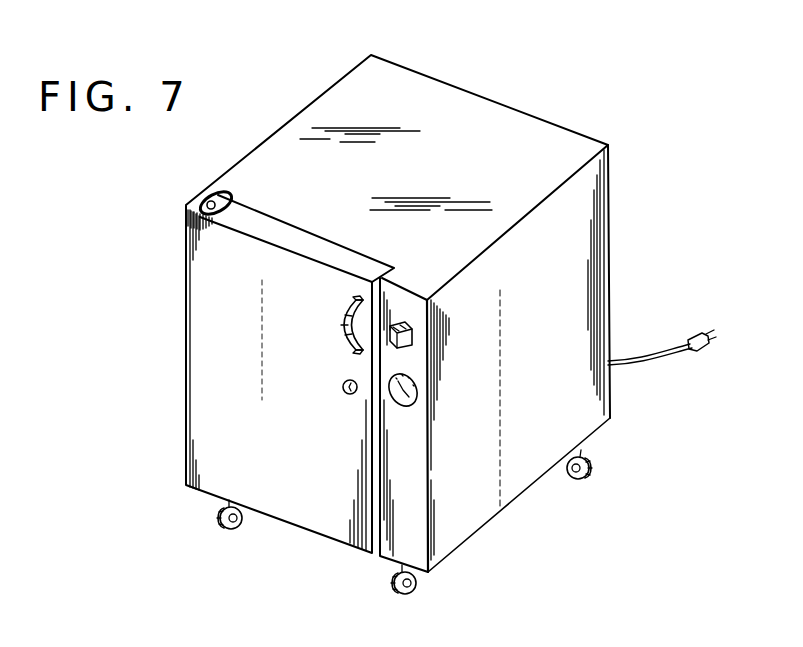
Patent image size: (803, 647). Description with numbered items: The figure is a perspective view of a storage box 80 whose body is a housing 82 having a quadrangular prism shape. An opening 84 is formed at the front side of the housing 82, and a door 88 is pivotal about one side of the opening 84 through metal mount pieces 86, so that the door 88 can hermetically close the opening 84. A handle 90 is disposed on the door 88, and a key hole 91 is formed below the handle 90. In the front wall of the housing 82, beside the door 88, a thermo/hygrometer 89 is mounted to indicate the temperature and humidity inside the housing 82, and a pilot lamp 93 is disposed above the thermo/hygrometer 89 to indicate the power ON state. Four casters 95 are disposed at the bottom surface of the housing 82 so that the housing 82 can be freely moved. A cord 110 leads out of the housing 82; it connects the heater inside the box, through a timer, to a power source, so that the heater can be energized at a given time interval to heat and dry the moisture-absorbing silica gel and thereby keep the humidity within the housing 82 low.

The oven cabinet assembly 80 is at (567, 76).
The housing 82 is at (608, 206).
The opening 84 is at (341, 243).
The metal mount pieces 86 is at (233, 199).
The door 88 is at (186, 310).
The thermo/hygrometer 89 is at (420, 386).
The handle 90 is at (341, 321).
The key hole 91 is at (342, 386).
The pilot lamp 93 is at (398, 322).
The casters 95 is at (220, 531).
The cord 110 is at (683, 339).